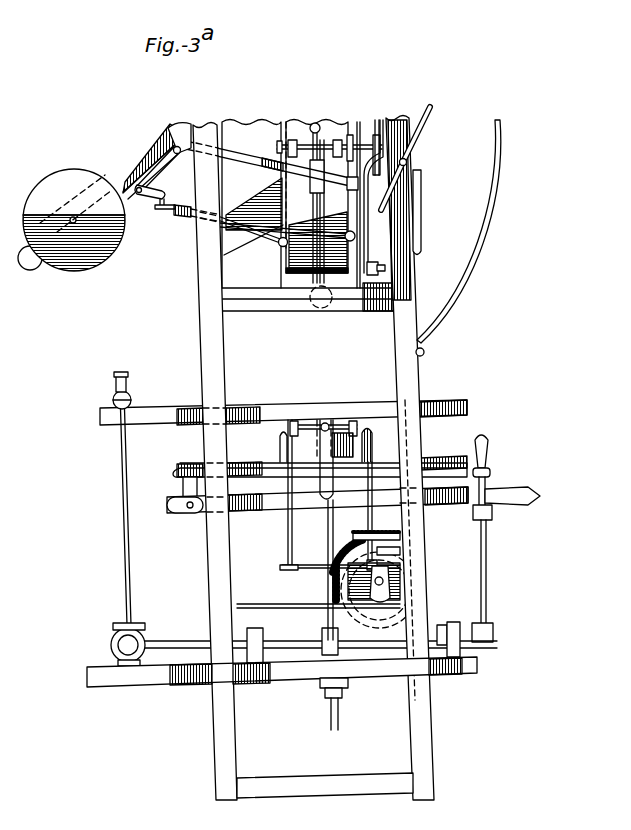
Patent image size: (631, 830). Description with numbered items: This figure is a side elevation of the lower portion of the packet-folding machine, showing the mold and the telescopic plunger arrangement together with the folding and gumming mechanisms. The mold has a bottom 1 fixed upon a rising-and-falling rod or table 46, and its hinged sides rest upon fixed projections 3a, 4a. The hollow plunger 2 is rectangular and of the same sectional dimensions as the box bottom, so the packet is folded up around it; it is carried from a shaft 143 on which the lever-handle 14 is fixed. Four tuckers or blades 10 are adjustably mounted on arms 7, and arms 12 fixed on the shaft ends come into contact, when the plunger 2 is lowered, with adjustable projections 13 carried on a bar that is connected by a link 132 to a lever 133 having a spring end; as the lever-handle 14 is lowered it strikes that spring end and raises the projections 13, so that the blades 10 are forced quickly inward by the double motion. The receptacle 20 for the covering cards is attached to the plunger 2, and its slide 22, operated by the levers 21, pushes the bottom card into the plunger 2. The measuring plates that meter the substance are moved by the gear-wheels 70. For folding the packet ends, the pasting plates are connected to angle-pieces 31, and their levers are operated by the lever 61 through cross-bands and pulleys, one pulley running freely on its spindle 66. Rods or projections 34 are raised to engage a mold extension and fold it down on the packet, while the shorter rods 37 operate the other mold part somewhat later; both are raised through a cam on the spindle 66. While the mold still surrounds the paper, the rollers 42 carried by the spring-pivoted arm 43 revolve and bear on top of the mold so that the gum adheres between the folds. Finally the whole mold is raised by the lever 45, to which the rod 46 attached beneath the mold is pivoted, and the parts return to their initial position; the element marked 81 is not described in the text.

The bottom 1 is at (298, 401).
The hollow plunger 2 is at (286, 263).
The fixed projection 3a is at (281, 450).
The fixed projection 4a is at (372, 448).
The arm 7 is at (280, 245).
The tucker or blade 10 is at (353, 245).
The arm 12 is at (407, 161).
The adjustable projection 13 is at (380, 268).
The lever-handle 14 is at (170, 145).
The receptacle 20 is at (216, 218).
The lever 21 is at (162, 178).
The slide 22 is at (165, 218).
The angle-piece 31 is at (357, 427).
The rod or projection 34 is at (372, 538).
The rod or projection 37 is at (290, 485).
The roller 42 is at (114, 398).
The spring-pivoted arm 43 is at (128, 384).
The lever 45 is at (540, 500).
The rising-and-falling rod or table 46 is at (326, 486).
The lever 61 is at (488, 570).
The spindle 66 is at (177, 642).
The gear-wheel 70 is at (350, 556).
The pivot 81 is at (373, 258).
The link 132 is at (309, 322).
The lever 133 is at (420, 213).
The shaft 143 is at (175, 125).